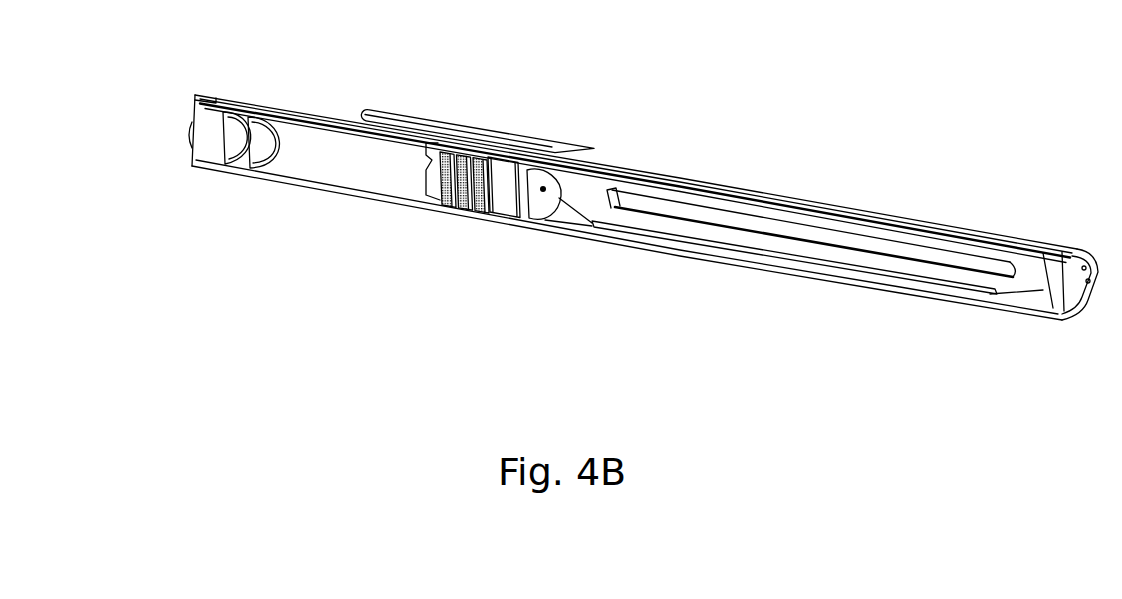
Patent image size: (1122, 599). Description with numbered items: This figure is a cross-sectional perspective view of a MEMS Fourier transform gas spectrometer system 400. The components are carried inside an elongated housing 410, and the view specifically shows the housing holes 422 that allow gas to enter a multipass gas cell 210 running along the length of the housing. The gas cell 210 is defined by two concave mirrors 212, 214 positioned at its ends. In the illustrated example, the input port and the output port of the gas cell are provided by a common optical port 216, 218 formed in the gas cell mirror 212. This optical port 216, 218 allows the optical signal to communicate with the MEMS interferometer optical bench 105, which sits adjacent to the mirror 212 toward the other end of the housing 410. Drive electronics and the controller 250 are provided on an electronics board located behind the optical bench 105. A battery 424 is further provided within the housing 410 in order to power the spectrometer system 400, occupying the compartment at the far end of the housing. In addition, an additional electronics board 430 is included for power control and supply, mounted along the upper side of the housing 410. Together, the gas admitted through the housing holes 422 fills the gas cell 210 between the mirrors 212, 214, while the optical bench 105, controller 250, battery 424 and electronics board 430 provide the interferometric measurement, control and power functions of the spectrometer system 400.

The spectrometer system 400 is at (885, 170).
The housing 410 is at (318, 112).
The battery 424 is at (378, 180).
The additional electronics board 430 is at (434, 118).
The controller 250 is at (447, 205).
The MEMS interferometer optical bench 105 is at (466, 207).
The optical port 216 is at (598, 247).
The optical port 218 is at (544, 194).
The housing holes 422 is at (637, 193).
The multipass gas cell 210 is at (690, 220).
The concave mirror 212 is at (600, 228).
The concave mirror 214 is at (982, 300).